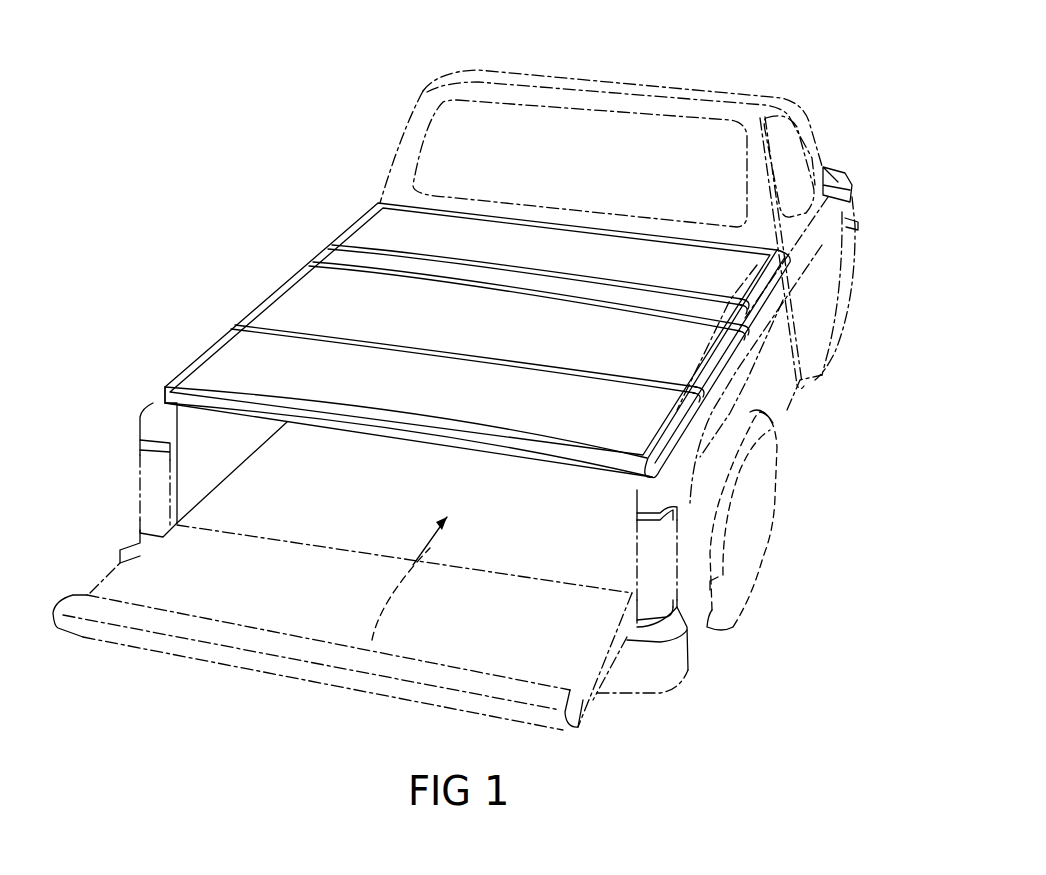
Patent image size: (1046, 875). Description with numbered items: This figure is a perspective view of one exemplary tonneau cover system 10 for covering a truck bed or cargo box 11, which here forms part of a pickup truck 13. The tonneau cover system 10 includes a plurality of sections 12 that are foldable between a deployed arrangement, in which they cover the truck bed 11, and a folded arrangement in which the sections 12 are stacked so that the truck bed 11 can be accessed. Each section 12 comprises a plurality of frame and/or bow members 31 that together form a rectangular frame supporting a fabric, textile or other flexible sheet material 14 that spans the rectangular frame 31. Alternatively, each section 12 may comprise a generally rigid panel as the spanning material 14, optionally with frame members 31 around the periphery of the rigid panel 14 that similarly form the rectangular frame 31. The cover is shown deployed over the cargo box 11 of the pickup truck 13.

The tonneau cover system 10 is at (442, 324).
The truck bed or cargo box 11 is at (390, 690).
The sections 12 is at (460, 315).
The pickup truck 13 is at (517, 398).
The flexible sheet material 14 is at (237, 345).
The frame and/or bow members 31 is at (158, 397).